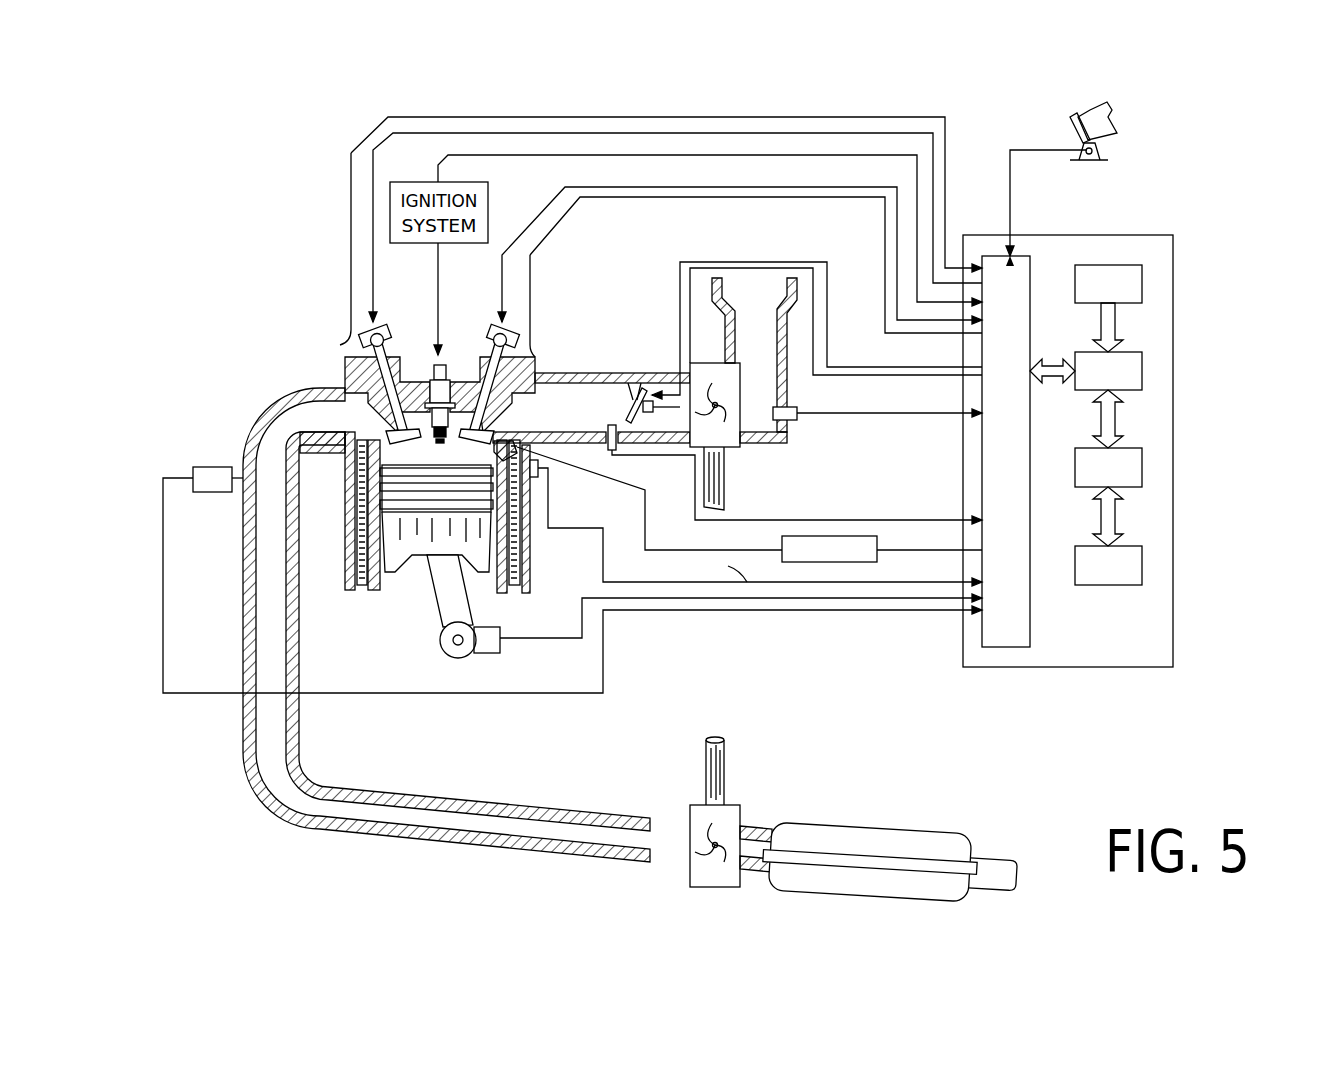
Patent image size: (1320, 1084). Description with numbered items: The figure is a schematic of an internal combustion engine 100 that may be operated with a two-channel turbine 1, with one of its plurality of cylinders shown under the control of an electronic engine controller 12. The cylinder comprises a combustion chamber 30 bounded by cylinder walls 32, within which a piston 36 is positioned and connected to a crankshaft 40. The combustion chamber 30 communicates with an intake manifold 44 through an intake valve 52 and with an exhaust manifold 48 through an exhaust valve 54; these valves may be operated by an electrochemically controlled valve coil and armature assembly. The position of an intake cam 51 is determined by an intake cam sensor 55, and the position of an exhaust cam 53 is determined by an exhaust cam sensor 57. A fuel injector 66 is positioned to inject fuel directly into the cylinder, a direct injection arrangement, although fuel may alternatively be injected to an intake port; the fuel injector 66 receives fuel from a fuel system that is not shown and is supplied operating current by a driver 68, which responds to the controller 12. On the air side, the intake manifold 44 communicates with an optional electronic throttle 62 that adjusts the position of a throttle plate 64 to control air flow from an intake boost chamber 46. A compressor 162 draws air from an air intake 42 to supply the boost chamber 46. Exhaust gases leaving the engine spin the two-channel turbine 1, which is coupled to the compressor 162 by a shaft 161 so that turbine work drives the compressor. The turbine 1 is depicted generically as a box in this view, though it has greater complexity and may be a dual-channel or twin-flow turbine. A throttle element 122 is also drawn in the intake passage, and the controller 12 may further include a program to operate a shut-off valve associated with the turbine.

The internal combustion engine 100 is at (285, 318).
The electronic engine controller 12 is at (1162, 235).
The combustion chamber 30 is at (437, 445).
The cylinder walls 32 is at (387, 590).
The piston 36 is at (422, 543).
The crankshaft 40 is at (450, 657).
The air intake 42 is at (739, 332).
The intake manifold 44 is at (547, 415).
The intake boost chamber 46 is at (656, 429).
The exhaust manifold 48 is at (298, 423).
The intake cam 51 is at (492, 327).
The intake valve 52 is at (472, 421).
The exhaust cam 53 is at (380, 333).
The exhaust valve 54 is at (378, 405).
The intake cam sensor 55 is at (513, 348).
The exhaust cam sensor 57 is at (362, 348).
The electronic throttle 62 is at (630, 384).
The throttle plate 64 is at (638, 385).
The fuel injector 66 is at (545, 465).
The driver 68 is at (803, 563).
The throttle 122 is at (610, 424).
The shaft 161 is at (728, 487).
The compressor 162 is at (720, 363).
The two-channel turbine 1 is at (695, 803).